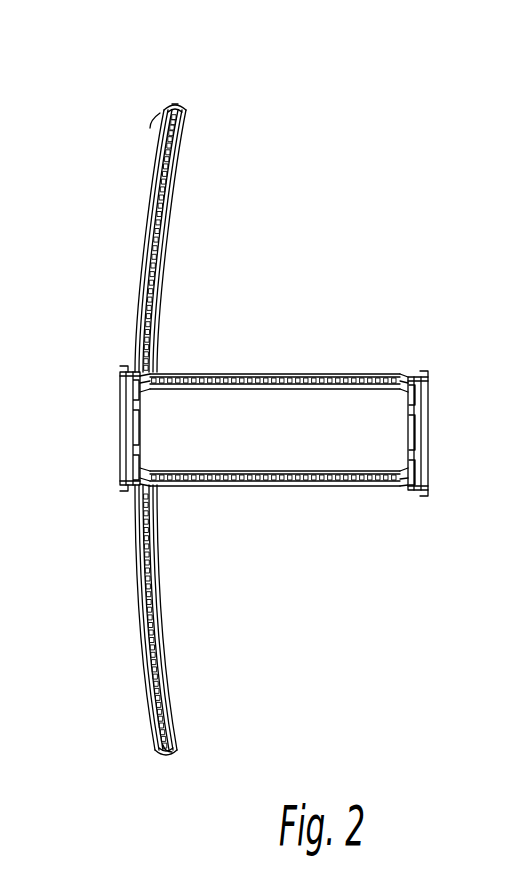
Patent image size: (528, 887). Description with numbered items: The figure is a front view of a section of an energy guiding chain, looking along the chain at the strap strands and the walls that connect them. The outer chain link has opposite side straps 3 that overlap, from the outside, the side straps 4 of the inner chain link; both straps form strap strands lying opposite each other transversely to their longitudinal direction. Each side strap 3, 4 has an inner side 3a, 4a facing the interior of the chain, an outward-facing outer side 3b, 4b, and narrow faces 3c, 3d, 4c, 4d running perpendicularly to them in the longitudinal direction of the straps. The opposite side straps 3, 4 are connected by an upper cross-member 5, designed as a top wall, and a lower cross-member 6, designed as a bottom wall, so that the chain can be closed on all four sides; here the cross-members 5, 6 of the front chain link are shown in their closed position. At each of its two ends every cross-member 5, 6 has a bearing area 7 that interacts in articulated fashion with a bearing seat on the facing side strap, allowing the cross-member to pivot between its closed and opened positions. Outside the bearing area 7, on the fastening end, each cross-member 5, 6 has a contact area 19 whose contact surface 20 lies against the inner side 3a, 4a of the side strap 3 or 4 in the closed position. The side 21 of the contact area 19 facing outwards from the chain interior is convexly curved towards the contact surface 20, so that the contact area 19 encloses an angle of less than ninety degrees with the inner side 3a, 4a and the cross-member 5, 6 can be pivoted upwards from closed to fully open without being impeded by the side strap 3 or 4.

The side strap 3 is at (118, 461).
The inner side 3a is at (140, 437).
The outer side 3b is at (120, 453).
The narrow face 3c is at (116, 364).
The narrow face 3d is at (128, 484).
The side strap 4 is at (423, 419).
The inner side 4a is at (408, 440).
The outer side 4b is at (428, 412).
The narrow face 4c is at (420, 378).
The narrow face 4d is at (418, 490).
The upper cross-member 5 is at (176, 240).
The lower cross-member 6 is at (170, 632).
The bearing area 7 is at (177, 95).
The contact area 19 is at (160, 140).
The contact surface 20 is at (183, 112).
The side of contact area 21 is at (142, 268).